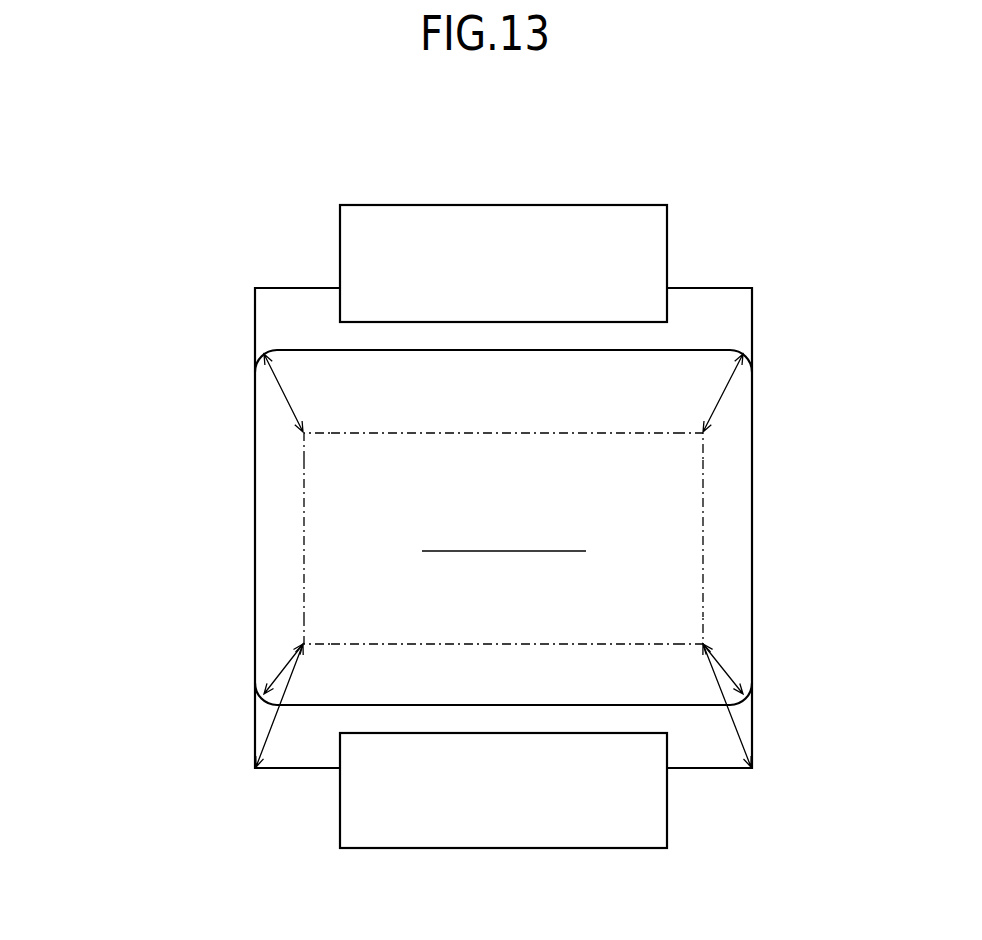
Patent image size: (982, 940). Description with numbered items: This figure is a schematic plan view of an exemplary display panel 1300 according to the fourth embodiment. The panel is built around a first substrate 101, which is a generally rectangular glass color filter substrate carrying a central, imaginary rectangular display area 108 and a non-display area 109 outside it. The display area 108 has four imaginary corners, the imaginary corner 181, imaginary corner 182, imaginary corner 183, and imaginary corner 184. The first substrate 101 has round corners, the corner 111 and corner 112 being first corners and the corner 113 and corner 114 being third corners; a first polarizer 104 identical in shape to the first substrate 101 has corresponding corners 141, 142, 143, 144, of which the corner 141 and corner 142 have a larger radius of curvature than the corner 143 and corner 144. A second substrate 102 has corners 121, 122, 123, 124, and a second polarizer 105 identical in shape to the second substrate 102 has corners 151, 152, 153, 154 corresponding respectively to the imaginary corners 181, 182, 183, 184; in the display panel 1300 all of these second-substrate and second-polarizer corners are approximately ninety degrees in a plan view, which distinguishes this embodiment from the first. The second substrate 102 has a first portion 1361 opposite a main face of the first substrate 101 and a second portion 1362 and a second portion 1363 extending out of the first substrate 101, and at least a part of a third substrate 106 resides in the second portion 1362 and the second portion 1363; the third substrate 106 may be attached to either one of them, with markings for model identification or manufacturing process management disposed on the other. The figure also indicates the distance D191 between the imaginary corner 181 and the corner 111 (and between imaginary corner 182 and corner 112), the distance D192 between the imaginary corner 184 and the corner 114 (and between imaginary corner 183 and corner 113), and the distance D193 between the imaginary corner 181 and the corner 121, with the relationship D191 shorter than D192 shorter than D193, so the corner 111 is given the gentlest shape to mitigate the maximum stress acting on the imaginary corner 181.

The display panel 1300 is at (277, 160).
The third substrate 106 is at (538, 220).
The second portion 1363 is at (712, 305).
The second portion 1362 is at (692, 753).
The first portion 1361 is at (254, 612).
The first substrate 101 is at (145, 527).
The first polarizer 104 is at (145, 527).
The second substrate 102 is at (747, 828).
The second polarizer 105 is at (737, 772).
The corner 123 is at (219, 268).
The corner 153 is at (255, 288).
The corner 124 is at (797, 269).
The corner 154 is at (752, 288).
The corner 122 is at (215, 789).
The corner 152 is at (255, 768).
The corner 121 is at (798, 789).
The corner 151 is at (753, 770).
The corner 113 is at (213, 332).
The corner 143 is at (255, 350).
The corner 114 is at (796, 332).
The corner 144 is at (752, 350).
The corner 112 is at (211, 723).
The corner 142 is at (255, 713).
The corner 111 is at (796, 723).
The corner 141 is at (753, 713).
The non-display area 109 is at (273, 520).
The display area 108 is at (674, 525).
The imaginary corner 181 is at (702, 641).
The imaginary corner 182 is at (305, 641).
The imaginary corner 183 is at (305, 436).
The imaginary corner 184 is at (702, 436).
The distance D191 is at (278, 672).
The distance D192 is at (283, 398).
The distance D193 is at (287, 690).